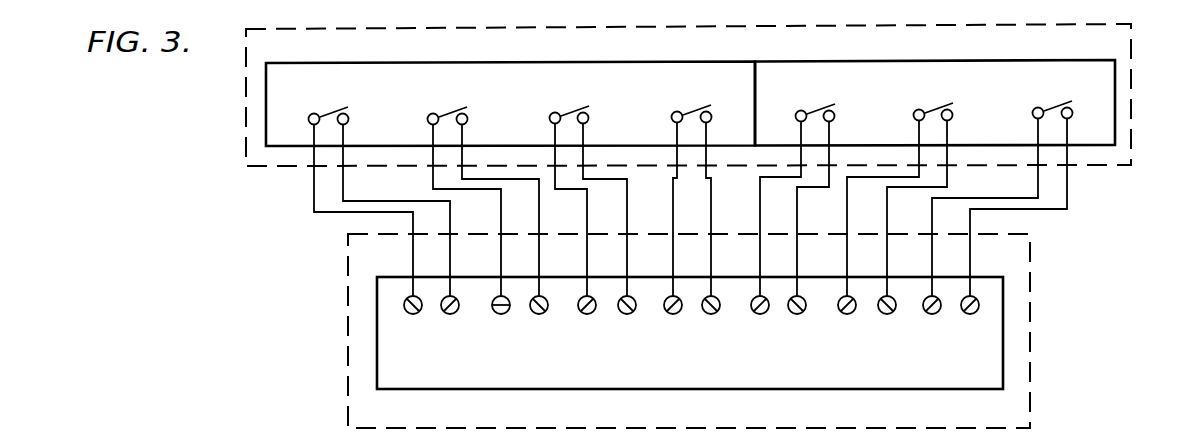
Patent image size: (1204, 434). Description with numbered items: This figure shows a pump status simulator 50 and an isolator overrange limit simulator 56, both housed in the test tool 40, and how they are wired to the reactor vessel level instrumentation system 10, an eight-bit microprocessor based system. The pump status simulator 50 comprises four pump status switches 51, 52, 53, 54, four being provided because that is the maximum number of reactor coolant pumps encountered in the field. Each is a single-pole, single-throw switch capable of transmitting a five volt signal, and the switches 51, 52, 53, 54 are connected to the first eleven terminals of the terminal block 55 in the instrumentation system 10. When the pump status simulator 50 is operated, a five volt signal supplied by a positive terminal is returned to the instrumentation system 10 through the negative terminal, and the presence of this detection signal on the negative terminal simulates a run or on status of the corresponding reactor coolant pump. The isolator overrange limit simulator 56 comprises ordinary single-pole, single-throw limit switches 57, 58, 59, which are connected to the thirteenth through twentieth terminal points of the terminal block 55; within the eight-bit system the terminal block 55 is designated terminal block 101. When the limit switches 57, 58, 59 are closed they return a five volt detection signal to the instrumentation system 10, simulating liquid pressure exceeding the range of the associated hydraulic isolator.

The reactor vessel level instrumentation system 10 is at (1027, 347).
The test tool 40 is at (1125, 48).
The pump status simulator 50 is at (631, 62).
The pump status switch 51 is at (349, 118).
The pump status switch 52 is at (468, 118).
The pump status switch 53 is at (589, 117).
The pump status switch 54 is at (712, 116).
The terminal block 55 is at (690, 345).
The isolator overrange limit simulator 56 is at (806, 62).
The limit switch 57 is at (834, 119).
The limit switch 58 is at (952, 118).
The limit switch 59 is at (1072, 116).
The terminal block 101 is at (966, 377).